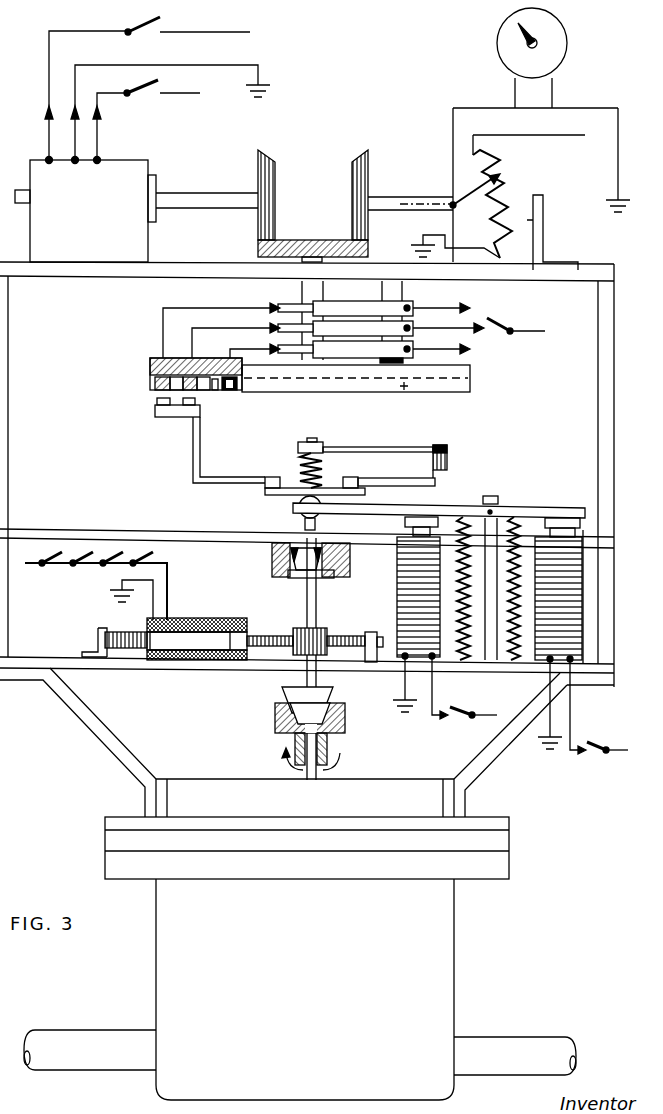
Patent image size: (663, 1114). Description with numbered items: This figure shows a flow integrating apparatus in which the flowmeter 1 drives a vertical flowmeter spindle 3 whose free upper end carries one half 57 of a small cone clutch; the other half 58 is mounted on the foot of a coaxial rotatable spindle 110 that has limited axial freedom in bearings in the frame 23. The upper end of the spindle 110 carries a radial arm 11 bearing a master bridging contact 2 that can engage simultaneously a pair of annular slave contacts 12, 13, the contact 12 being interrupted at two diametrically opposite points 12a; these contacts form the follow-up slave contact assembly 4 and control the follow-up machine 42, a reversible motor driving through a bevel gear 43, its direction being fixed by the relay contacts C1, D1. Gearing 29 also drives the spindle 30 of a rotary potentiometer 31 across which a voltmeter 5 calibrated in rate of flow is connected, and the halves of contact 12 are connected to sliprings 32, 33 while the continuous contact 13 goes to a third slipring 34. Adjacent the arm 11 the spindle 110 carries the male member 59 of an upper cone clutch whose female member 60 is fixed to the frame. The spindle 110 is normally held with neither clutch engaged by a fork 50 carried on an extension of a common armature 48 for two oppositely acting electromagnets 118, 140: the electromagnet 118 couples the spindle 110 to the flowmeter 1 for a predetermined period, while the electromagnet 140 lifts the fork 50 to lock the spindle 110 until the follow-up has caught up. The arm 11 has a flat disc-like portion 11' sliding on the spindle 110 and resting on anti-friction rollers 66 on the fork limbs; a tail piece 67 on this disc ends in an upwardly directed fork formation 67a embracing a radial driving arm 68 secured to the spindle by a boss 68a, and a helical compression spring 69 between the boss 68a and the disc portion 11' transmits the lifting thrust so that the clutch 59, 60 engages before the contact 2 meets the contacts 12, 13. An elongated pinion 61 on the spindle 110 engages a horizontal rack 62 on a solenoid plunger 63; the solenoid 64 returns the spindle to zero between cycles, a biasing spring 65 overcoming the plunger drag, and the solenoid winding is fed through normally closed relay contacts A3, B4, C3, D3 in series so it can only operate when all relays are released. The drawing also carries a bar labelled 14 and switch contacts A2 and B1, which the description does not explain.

The flowmeter 1 is at (304, 957).
The master bridging contact 2 is at (156, 410).
The flowmeter spindle 3 is at (312, 753).
The follow-up slave contact assembly 4 is at (340, 394).
The voltmeter 5 is at (497, 43).
The radial arm 11 is at (220, 452).
The flat disc-like portion 11' is at (363, 455).
The annular slave contact 12 is at (157, 390).
The interruption points 12a is at (226, 392).
The annular slave contact 13 is at (196, 392).
The contact block 14 is at (152, 358).
The frame 23 is at (14, 528).
The gearing 29 is at (353, 241).
The potentiometer spindle 30 is at (390, 212).
The rotary potentiometer 31 is at (517, 174).
The slipring 32 is at (280, 348).
The slipring 33 is at (280, 306).
The third slipring 34 is at (280, 327).
The reversible rotary machine 42 is at (98, 225).
The bevel gear 43 is at (272, 163).
The common armature 48 is at (440, 506).
The fork 50 is at (298, 506).
The cone clutch half 57 is at (347, 725).
The cone clutch half 58 is at (335, 697).
The male clutch member 59 is at (292, 581).
The female clutch member 60 is at (272, 563).
The elongated pinion 61 is at (322, 629).
The horizontal rack 62 is at (352, 636).
The solenoid plunger 63 is at (214, 632).
The solenoid 64 is at (197, 618).
The biasing spring 65 is at (118, 632).
The anti-friction rollers 66 is at (302, 529).
The tail piece 67 is at (395, 481).
The fork formation 67a is at (449, 463).
The radial driving arm 68 is at (378, 449).
The boss 68a is at (309, 441).
The helical compression spring 69 is at (298, 472).
The rotatable spindle 110 is at (306, 608).
The electromagnet 118 is at (398, 588).
The electromagnet 140 is at (543, 670).
The relay contact C1 is at (138, 25).
The relay contact D1 is at (142, 94).
The relay contacts A3 is at (88, 580).
The relay contacts B4 is at (75, 550).
The relay contacts C3 is at (109, 550).
The relay contacts D3 is at (139, 550).
The switch A2 is at (477, 725).
The switch B1 is at (612, 758).